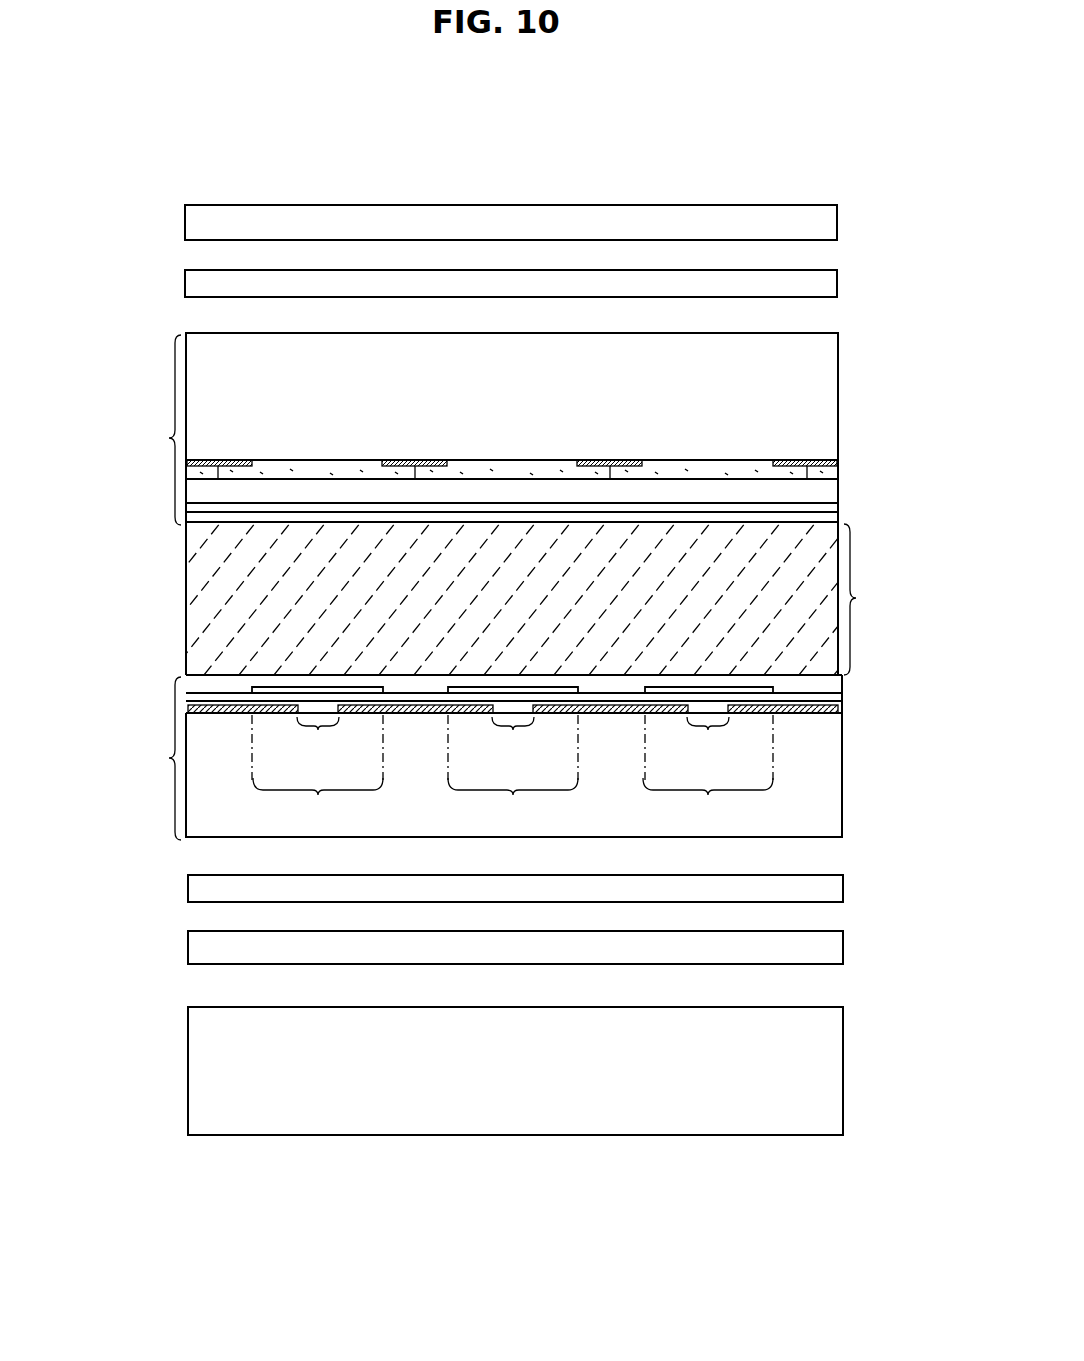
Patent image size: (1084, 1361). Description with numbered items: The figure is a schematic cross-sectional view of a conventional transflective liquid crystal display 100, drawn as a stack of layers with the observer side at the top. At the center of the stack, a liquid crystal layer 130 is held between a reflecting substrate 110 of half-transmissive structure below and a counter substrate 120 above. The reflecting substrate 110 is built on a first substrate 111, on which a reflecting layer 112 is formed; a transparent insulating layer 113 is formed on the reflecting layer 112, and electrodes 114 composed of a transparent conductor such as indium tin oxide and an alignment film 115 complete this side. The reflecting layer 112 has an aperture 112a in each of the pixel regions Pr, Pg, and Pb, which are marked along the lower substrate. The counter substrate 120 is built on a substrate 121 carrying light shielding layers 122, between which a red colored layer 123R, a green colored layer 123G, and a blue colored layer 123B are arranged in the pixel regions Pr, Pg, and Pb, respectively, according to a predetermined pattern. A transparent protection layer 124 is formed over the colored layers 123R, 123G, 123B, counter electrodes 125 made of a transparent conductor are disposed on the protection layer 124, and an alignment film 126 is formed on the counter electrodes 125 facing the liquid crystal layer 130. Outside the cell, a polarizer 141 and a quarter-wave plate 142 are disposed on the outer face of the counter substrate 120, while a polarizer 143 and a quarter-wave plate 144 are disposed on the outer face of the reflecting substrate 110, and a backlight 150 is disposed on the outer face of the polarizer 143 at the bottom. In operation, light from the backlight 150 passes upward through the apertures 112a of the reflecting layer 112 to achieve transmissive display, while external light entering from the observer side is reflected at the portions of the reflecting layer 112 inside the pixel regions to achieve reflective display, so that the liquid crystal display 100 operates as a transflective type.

The transflective liquid crystal display 100 is at (532, 93).
The reflecting substrate 110 is at (507, 741).
The first substrate 111 is at (842, 802).
The reflecting layer 112 is at (820, 708).
The aperture 112a is at (512, 742).
The transparent insulating layer 113 is at (842, 695).
The electrodes 114 is at (252, 687).
The alignment film 115 is at (289, 675).
The counter substrate 120 is at (507, 449).
The substrate 121 is at (823, 384).
The light shielding layers 122 is at (816, 460).
The red colored layer 123R is at (320, 467).
The green colored layer 123G is at (515, 467).
The blue colored layer 123B is at (708, 467).
The transparent protection layer 124 is at (831, 492).
The counter electrodes 125 is at (186, 510).
The alignment film 126 is at (225, 522).
The liquid crystal layer 130 is at (510, 598).
The polarizer 141 is at (185, 229).
The quarter-wave plate 142 is at (838, 284).
The polarizer 143 is at (188, 950).
The quarter-wave plate 144 is at (843, 888).
The backlight 150 is at (470, 1135).